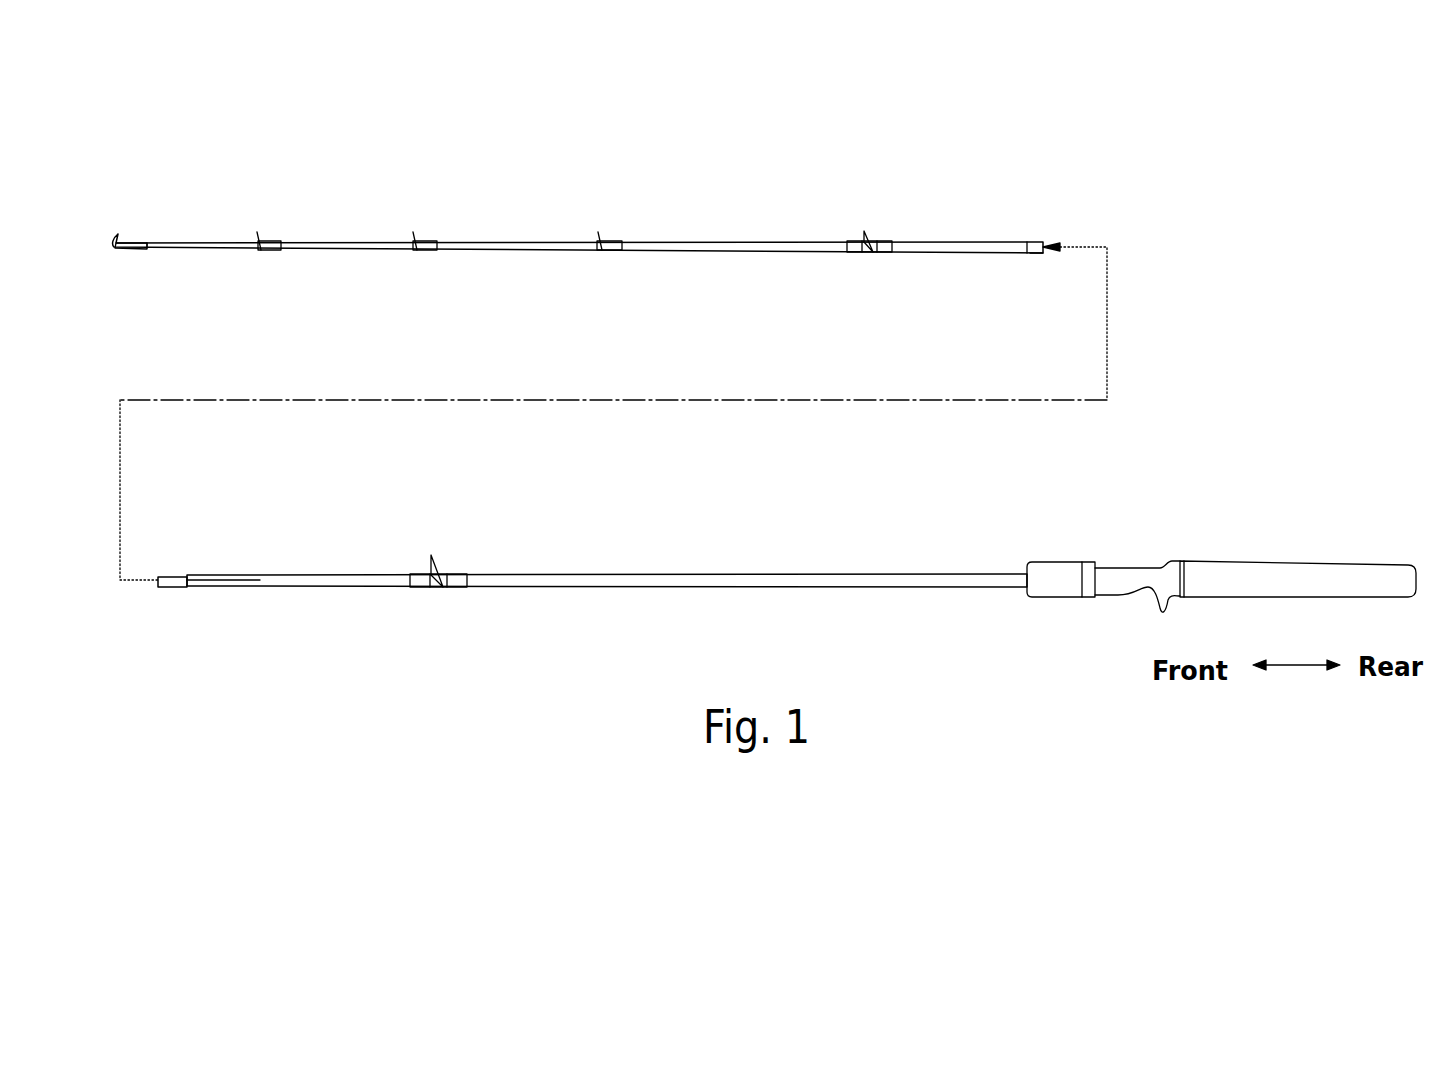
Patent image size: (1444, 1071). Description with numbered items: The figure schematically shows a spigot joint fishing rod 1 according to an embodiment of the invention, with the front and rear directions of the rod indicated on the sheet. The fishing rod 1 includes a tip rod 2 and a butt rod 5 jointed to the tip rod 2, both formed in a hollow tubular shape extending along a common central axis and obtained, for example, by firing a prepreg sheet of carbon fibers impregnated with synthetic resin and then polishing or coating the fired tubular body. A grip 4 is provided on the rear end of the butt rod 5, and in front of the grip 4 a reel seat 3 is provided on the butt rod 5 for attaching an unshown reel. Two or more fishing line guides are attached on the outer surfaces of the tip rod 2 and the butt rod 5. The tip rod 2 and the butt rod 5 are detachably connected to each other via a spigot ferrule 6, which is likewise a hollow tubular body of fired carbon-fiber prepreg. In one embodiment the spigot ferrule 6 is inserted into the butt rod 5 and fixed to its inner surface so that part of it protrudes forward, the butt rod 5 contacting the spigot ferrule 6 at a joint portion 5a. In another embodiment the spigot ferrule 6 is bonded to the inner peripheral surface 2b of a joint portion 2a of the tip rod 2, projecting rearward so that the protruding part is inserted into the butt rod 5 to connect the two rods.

The spigot joint fishing rod 1 is at (1150, 183).
The tip rod 2 is at (733, 241).
The joint portion 2a is at (999, 240).
The inner peripheral surface 2b is at (1027, 254).
The reel seat 3 is at (1115, 572).
The grip 4 is at (1263, 572).
The butt rod 5 is at (747, 574).
The joint portion 5a is at (205, 590).
The spigot ferrule 6 is at (171, 575).